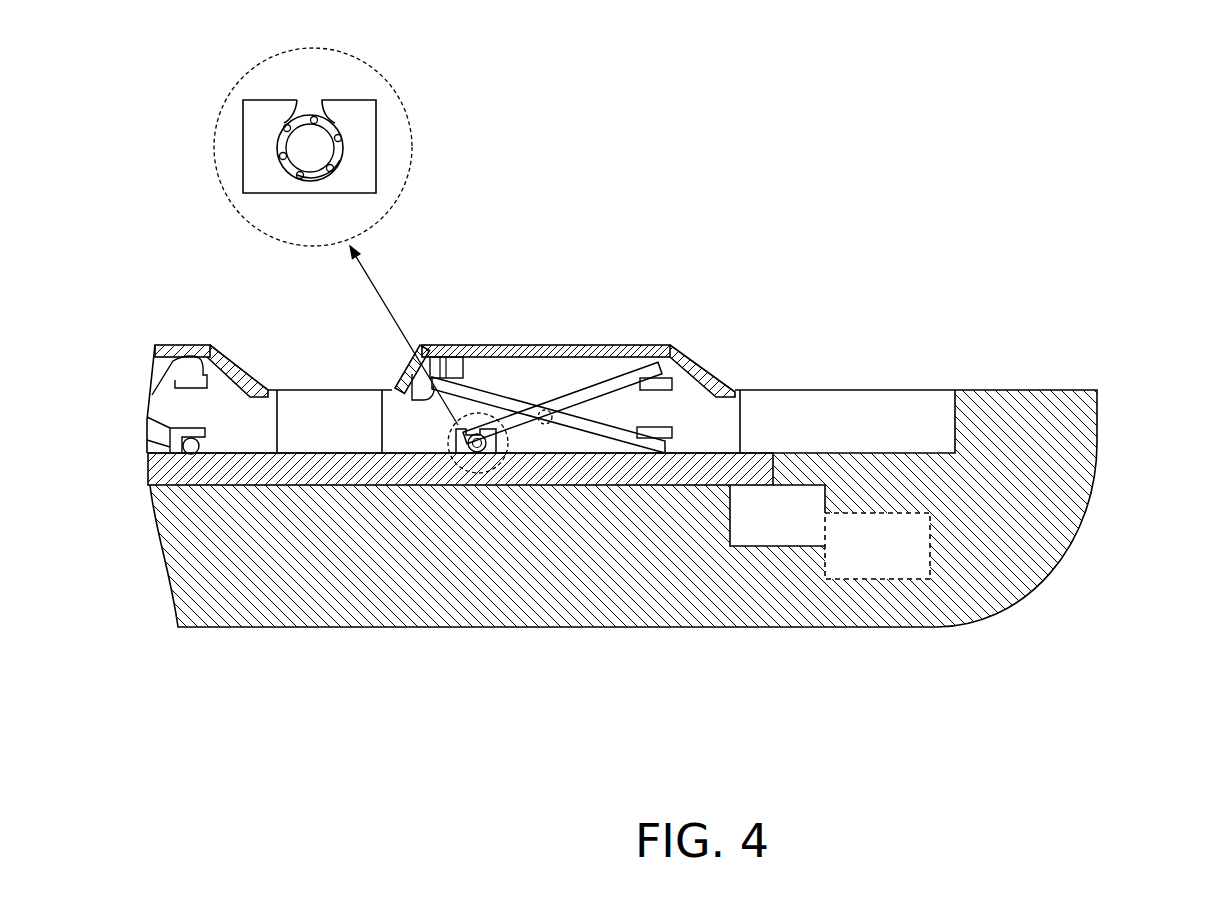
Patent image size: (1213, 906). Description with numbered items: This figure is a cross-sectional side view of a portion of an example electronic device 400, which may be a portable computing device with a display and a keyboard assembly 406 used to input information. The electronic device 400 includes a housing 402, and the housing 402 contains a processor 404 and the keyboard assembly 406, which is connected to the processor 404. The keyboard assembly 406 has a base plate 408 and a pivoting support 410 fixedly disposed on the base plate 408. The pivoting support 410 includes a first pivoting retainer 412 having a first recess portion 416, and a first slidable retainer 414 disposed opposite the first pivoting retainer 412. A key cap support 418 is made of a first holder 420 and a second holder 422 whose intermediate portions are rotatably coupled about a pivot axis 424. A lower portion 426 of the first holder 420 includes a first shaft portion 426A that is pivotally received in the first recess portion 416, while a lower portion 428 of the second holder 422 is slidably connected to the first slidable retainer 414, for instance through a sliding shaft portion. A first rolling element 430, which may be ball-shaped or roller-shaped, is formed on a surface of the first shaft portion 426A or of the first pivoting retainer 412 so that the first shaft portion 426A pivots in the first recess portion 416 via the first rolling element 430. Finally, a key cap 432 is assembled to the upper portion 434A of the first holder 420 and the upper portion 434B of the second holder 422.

The electronic device 400 is at (902, 748).
The housing 402 is at (1080, 509).
The processor 404 is at (895, 583).
The keyboard assembly 406 is at (900, 390).
The base plate 408 is at (148, 470).
The pivoting support 410 is at (643, 268).
The first pivoting retainer 412 is at (473, 420).
The first slidable retainer 414 is at (653, 423).
The first recess portion 416 is at (313, 100).
The key cap support 418 is at (643, 542).
The first holder 420 is at (602, 403).
The second holder 422 is at (620, 445).
The pivot axis 424 is at (545, 420).
The lower portion of first holder 426 is at (376, 147).
The first shaft portion 426A is at (303, 148).
The lower portion of second holder 428 is at (648, 450).
The first rolling element 430 is at (330, 172).
The key cap 432 is at (705, 370).
The upper portion of first holder 434A is at (678, 348).
The upper portion of second holder 434B is at (458, 420).